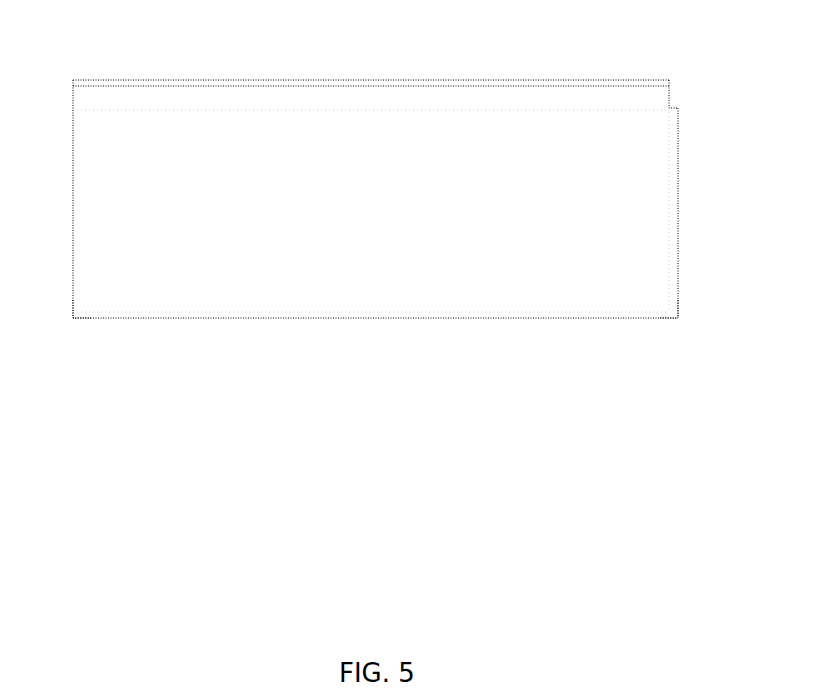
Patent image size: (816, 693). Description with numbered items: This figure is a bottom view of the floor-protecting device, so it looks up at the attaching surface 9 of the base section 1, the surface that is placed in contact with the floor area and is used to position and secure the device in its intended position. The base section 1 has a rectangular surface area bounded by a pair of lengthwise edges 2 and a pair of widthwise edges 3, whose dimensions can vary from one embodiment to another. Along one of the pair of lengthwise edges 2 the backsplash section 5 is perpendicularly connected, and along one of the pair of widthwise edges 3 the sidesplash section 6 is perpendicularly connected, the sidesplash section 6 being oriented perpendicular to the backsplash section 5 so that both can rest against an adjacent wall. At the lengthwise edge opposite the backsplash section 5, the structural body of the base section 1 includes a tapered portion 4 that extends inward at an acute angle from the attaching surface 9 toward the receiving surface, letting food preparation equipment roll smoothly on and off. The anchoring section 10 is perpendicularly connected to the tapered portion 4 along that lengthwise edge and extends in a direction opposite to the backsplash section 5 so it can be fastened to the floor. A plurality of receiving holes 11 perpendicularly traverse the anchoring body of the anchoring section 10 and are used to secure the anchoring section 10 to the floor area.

The base section 1 is at (66, 192).
The pair of lengthwise edges 2 is at (492, 86).
The pair of widthwise edges 3 is at (73, 284).
The tapered portion 4 is at (672, 94).
The backsplash section 5 is at (340, 323).
The sidesplash section 6 is at (681, 220).
The attaching surface 9 is at (677, 147).
The anchoring section 10 is at (192, 84).
The plurality of receiving holes 11 is at (316, 81).